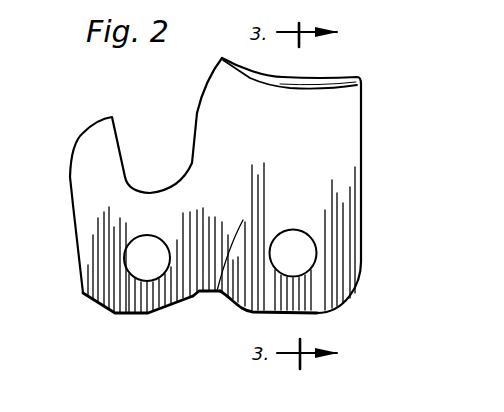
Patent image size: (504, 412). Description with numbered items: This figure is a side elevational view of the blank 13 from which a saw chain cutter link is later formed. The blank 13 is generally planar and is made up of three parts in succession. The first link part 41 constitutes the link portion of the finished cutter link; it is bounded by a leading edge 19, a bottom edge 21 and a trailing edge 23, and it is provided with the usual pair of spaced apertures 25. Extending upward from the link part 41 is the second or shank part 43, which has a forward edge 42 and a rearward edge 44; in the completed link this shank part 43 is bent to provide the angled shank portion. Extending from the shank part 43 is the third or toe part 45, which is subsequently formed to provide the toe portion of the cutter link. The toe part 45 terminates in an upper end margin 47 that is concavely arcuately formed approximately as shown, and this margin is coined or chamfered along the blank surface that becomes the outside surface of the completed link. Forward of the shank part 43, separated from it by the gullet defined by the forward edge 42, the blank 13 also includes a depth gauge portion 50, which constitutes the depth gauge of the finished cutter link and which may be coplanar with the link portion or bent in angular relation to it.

The blank 13 is at (152, 318).
The leading edge 19 is at (80, 259).
The bottom edge 21 is at (273, 311).
The trailing edge 23 is at (361, 255).
The spaced apertures 25 is at (137, 237).
The first link part 41 is at (224, 290).
The forward edge 42 is at (192, 160).
The shank part 43 is at (292, 163).
The rearward edge 44 is at (361, 133).
The toe part 45 is at (312, 98).
The upper end margin 47 is at (317, 82).
The depth gauge portion 50 is at (90, 147).